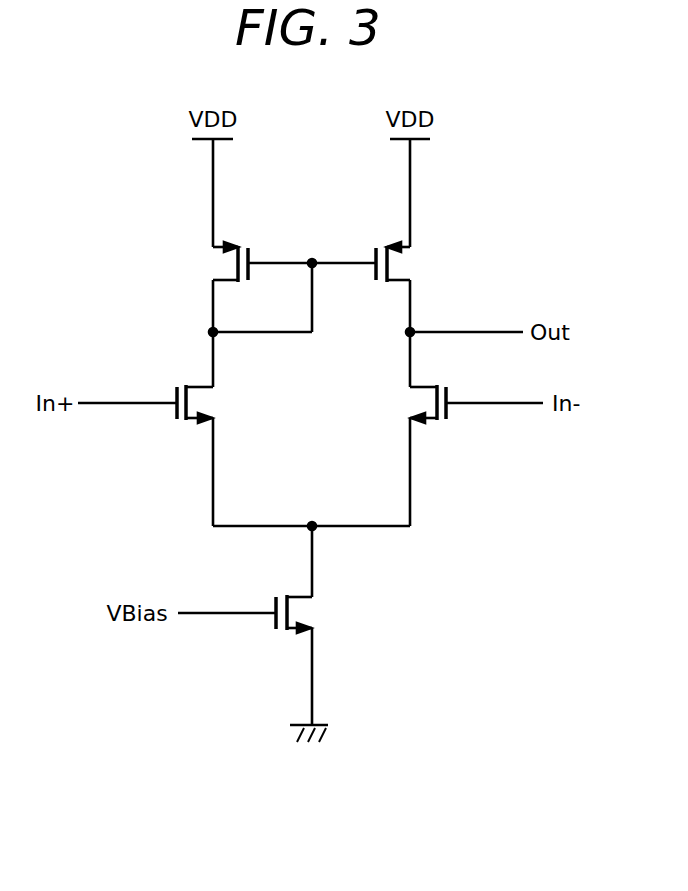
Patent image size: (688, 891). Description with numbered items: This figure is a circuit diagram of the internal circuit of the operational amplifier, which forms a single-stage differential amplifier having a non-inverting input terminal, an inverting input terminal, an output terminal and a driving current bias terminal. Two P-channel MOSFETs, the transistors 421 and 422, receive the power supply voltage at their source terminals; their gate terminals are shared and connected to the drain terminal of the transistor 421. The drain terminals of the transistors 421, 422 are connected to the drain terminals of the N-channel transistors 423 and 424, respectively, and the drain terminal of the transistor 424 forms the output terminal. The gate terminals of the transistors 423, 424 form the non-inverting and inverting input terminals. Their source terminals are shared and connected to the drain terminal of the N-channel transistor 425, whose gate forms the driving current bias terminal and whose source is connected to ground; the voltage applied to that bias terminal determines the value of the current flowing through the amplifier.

The transistor 421 is at (242, 240).
The transistor 422 is at (382, 240).
The transistor 423 is at (182, 380).
The transistor 424 is at (440, 423).
The transistor 425 is at (313, 609).